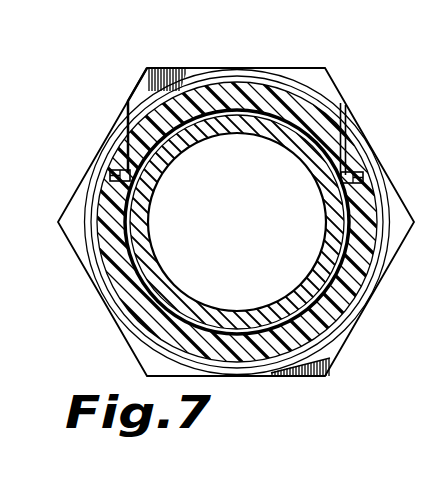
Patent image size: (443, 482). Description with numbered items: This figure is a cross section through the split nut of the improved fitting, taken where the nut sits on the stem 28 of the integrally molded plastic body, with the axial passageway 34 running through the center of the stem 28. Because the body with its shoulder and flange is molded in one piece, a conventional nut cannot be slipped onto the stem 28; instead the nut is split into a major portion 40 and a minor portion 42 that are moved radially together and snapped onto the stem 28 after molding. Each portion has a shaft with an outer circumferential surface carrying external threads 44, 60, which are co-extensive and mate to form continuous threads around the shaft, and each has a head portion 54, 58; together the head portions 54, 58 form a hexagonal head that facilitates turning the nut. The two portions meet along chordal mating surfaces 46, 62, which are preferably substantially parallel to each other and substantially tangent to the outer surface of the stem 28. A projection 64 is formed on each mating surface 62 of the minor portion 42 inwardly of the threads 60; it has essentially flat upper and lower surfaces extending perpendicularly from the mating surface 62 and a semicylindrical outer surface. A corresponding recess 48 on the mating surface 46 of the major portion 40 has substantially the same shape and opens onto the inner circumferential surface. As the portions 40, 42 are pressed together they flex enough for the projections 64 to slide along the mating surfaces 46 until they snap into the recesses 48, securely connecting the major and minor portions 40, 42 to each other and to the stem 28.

The stem 28 is at (220, 127).
The axial passageway 34 is at (253, 263).
The major portion 40 is at (150, 318).
The minor portion 42 is at (182, 105).
The external threads 44 is at (348, 330).
The mating surface 46 is at (328, 124).
The recess 48 is at (364, 198).
The head portion 54 is at (292, 380).
The head portion 58 is at (138, 83).
The external threads 60 is at (300, 76).
The mating surface 62 is at (343, 134).
The projection 64 is at (110, 176).